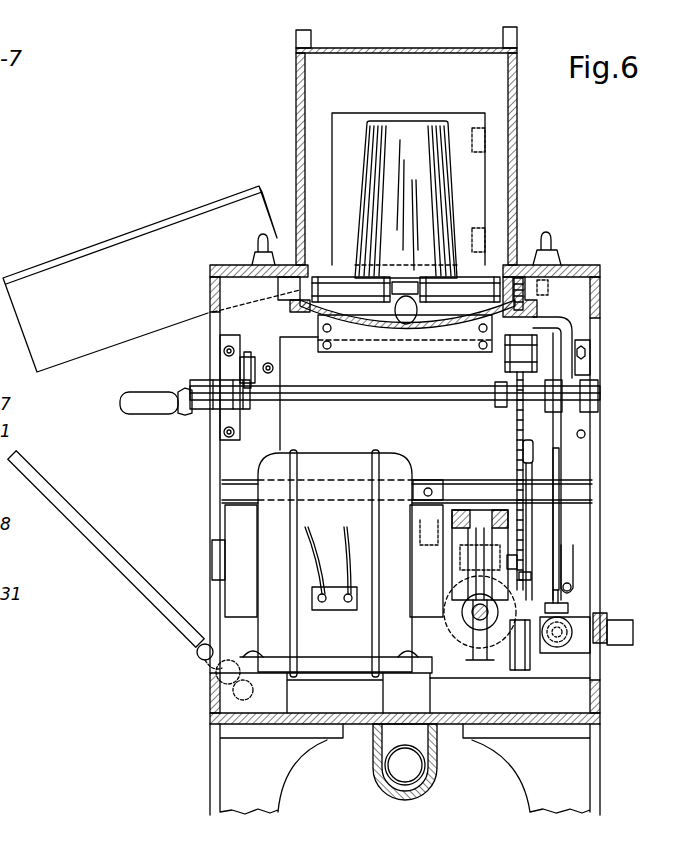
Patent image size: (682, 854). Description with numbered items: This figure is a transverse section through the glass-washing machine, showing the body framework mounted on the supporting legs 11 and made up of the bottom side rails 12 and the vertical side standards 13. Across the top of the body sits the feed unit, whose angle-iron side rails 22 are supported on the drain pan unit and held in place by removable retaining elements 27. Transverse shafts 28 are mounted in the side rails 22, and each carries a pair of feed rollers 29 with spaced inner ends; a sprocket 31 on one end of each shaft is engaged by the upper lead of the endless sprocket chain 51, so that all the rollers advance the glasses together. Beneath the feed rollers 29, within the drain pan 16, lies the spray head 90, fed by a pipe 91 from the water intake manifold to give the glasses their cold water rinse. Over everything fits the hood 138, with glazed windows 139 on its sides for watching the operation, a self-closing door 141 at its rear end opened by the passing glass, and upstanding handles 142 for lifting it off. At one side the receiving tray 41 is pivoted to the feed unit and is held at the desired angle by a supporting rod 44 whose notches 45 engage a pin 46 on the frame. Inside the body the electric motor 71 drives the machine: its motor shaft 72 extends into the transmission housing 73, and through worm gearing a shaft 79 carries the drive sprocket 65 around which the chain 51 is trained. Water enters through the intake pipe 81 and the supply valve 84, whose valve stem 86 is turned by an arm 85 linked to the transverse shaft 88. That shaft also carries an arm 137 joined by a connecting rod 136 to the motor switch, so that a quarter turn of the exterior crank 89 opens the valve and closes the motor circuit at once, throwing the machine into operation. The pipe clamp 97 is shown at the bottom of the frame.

The hood 138 is at (407, 62).
The glazed windows 139 is at (296, 148).
The upstanding handles 142 is at (517, 40).
The self-closing door 141 is at (443, 124).
The side rails 22 is at (510, 265).
The removable retaining elements 27 is at (556, 258).
The sprocket 31 is at (525, 291).
The pipe 91 is at (560, 337).
The feed rollers 29 is at (330, 276).
The transverse shafts 28 is at (424, 276).
The receiving tray 41 is at (140, 279).
The arm 137 is at (250, 360).
The connecting rod 136 is at (274, 369).
The spray head 90 is at (393, 310).
The drain pan 16 is at (452, 335).
The transverse shaft 88 is at (424, 392).
The crank 89 is at (178, 412).
The electric motor 71 is at (342, 464).
The endless sprocket chain 51 is at (516, 452).
The transmission housing 73 is at (466, 540).
The valve stem 86 is at (532, 522).
The shaft 79 is at (517, 563).
The vertical side standards 13 is at (592, 554).
The drive sprocket 65 is at (531, 576).
The supporting rod 44 is at (172, 620).
The pin 46 is at (218, 656).
The notches 45 is at (205, 676).
The motor shaft 72 is at (477, 620).
The arm 85 is at (517, 668).
The supply valve 84 is at (538, 650).
The intake pipe 81 is at (625, 640).
The bottom side rails 12 is at (598, 706).
The supporting legs 11 is at (236, 775).
The pipe clamp 97 is at (398, 768).